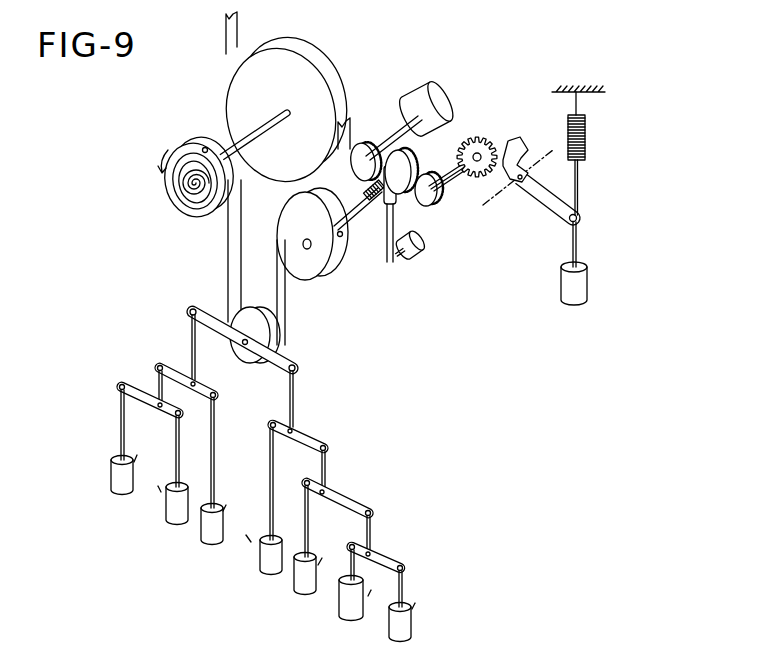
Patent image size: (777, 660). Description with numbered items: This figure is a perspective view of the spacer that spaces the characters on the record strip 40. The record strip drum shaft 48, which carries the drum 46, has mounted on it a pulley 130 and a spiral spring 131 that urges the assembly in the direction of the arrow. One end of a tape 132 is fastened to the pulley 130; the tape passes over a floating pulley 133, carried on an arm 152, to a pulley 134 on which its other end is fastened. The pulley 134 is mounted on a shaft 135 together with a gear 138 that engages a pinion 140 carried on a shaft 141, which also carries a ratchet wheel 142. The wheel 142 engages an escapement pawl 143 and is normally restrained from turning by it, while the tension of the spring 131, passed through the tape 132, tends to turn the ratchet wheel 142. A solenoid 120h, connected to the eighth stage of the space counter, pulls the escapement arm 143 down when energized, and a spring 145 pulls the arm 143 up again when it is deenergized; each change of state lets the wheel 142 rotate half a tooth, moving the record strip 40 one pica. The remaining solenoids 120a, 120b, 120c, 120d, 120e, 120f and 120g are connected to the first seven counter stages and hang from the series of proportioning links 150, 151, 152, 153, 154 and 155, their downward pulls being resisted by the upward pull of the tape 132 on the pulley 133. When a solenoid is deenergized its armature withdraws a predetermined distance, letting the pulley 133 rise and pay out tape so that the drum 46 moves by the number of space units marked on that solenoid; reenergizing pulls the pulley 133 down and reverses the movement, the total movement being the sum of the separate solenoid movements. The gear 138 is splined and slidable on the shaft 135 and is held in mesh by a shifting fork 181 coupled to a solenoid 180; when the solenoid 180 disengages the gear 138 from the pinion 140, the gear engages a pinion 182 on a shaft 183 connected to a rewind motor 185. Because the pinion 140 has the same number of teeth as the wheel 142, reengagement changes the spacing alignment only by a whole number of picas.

The record strip 40 is at (228, 31).
The drum 46 is at (232, 86).
The record strip drum shaft 48 is at (235, 143).
The pulley 130 is at (178, 142).
The spiral spring 131 is at (175, 182).
The tape 132 is at (228, 237).
The floating pulley 133 is at (253, 355).
The pulley 134 is at (323, 273).
The shaft 135 is at (347, 212).
The gear 138 is at (410, 200).
The pinion 140 is at (440, 200).
The shaft 141 is at (463, 190).
The ratchet wheel 142 is at (473, 140).
The escapement pawl 143 is at (512, 157).
The spring 145 is at (585, 140).
The proportioning link 150 is at (138, 385).
The proportioning link 151 is at (177, 363).
The arm 152 is at (190, 306).
The proportioning link 153 is at (308, 432).
The proportioning link 154 is at (350, 500).
The proportioning link 155 is at (388, 560).
The solenoid 180 is at (410, 262).
The shifting fork 181 is at (390, 258).
The pinion 182 is at (363, 143).
The shaft 183 is at (395, 128).
The rewind motor 185 is at (437, 85).
The solenoid 120a is at (410, 622).
The solenoid 120b is at (113, 480).
The solenoid 120c is at (352, 615).
The solenoid 120d is at (168, 512).
The solenoid 120e is at (302, 583).
The solenoid 120f is at (203, 537).
The solenoid 120g is at (260, 565).
The solenoid 120h is at (575, 300).